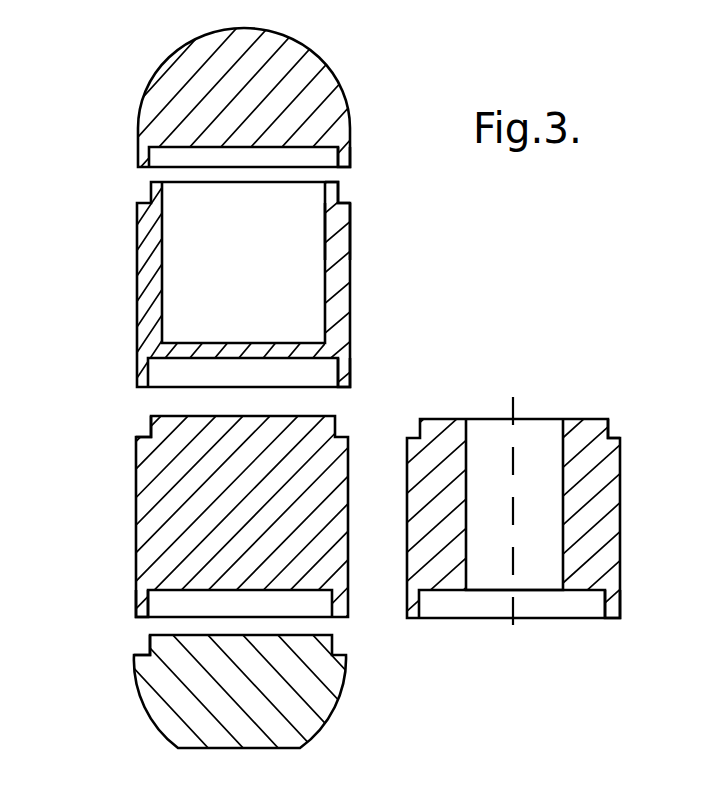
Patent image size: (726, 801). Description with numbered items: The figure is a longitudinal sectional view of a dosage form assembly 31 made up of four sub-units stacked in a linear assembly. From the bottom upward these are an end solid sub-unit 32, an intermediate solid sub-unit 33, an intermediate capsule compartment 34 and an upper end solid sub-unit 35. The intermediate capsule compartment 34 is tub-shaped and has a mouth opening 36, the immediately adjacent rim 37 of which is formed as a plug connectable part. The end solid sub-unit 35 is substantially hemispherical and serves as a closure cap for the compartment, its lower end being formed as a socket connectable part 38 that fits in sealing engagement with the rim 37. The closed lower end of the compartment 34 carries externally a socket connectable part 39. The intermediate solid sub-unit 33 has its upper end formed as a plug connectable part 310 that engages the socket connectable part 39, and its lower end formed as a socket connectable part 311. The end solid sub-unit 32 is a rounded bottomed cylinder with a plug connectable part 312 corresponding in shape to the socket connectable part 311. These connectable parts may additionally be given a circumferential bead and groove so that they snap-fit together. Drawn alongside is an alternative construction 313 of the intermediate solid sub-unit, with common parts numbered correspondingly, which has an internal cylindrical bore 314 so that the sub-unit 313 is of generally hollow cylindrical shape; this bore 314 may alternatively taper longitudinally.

The dosage form assembly 31 is at (480, 263).
The end solid sub-unit 32 is at (152, 703).
The intermediate solid sub-unit 33 is at (140, 515).
The intermediate capsule compartment 34 is at (184, 288).
The end solid sub-unit 35 is at (162, 95).
The mouth opening 36 is at (300, 204).
The rim 37 is at (338, 196).
The socket connectable part 38 is at (348, 157).
The socket connectable part 39 is at (348, 382).
The plug connectable part 310 is at (148, 425).
The socket connectable part 311 is at (137, 600).
The plug connectable part 312 is at (146, 642).
The alternative construction of the intermediate solid sub-unit 313 is at (612, 498).
The internal cylindrical bore 314 is at (540, 428).